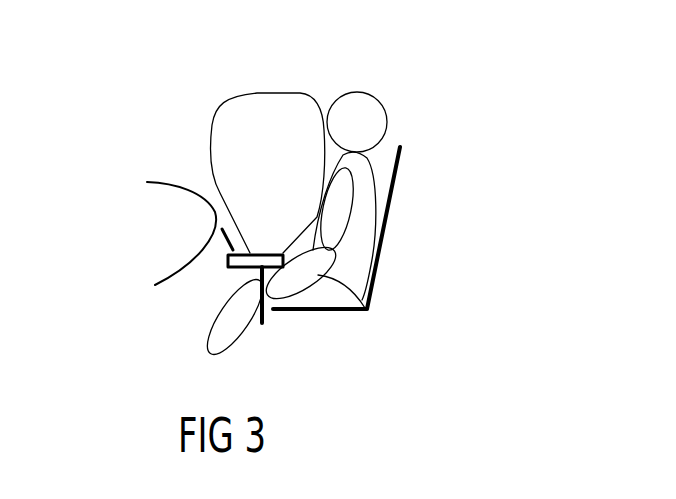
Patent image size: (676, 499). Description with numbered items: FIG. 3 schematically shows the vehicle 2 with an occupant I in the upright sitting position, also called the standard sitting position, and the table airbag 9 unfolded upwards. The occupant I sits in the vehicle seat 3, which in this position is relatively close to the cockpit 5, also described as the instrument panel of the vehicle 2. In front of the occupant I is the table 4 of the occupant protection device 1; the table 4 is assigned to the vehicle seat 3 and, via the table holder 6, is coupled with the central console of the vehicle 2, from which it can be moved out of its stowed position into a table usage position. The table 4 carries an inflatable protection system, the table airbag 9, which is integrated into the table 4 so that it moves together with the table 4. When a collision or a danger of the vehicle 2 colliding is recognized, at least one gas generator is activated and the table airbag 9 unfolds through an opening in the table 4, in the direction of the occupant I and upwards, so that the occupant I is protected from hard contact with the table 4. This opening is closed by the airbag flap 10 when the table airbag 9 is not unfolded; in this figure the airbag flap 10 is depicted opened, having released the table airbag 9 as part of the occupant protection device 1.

The occupant protection device 1 is at (181, 119).
The vehicle 2 is at (469, 174).
The vehicle seat 3 is at (370, 309).
The table 4 is at (228, 268).
The cockpit 5 is at (160, 225).
The table holder 6 is at (263, 320).
The table airbag 9 is at (265, 120).
The airbag flap 10 is at (223, 237).
The occupant I is at (378, 127).